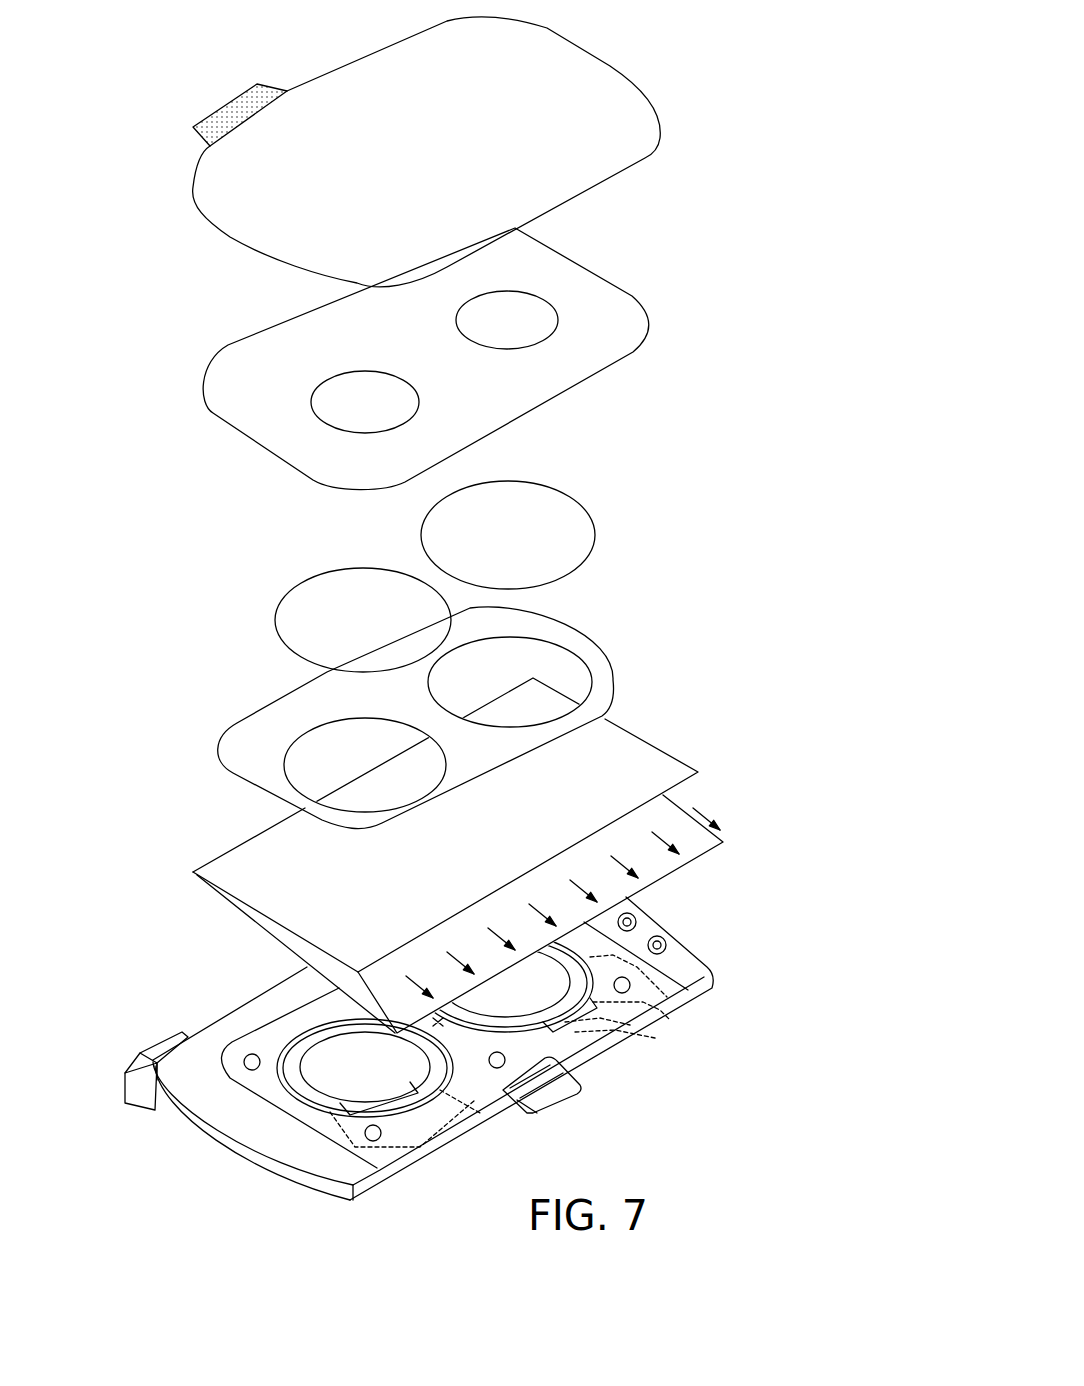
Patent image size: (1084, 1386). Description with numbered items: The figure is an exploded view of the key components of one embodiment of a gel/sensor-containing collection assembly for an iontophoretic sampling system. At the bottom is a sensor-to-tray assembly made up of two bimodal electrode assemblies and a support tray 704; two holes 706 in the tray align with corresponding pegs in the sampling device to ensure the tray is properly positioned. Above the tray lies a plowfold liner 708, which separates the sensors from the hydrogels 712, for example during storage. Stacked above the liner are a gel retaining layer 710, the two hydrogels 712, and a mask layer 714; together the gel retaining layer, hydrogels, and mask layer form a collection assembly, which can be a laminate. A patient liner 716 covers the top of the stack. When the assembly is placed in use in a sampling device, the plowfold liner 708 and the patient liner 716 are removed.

The support tray 704 is at (558, 1053).
The holes 706 is at (638, 919).
The plowfold liner 708 is at (640, 818).
The gel retaining layer 710 is at (600, 648).
The hydrogels 712 is at (577, 530).
The mask layer 714 is at (577, 320).
The patient liner 716 is at (595, 85).